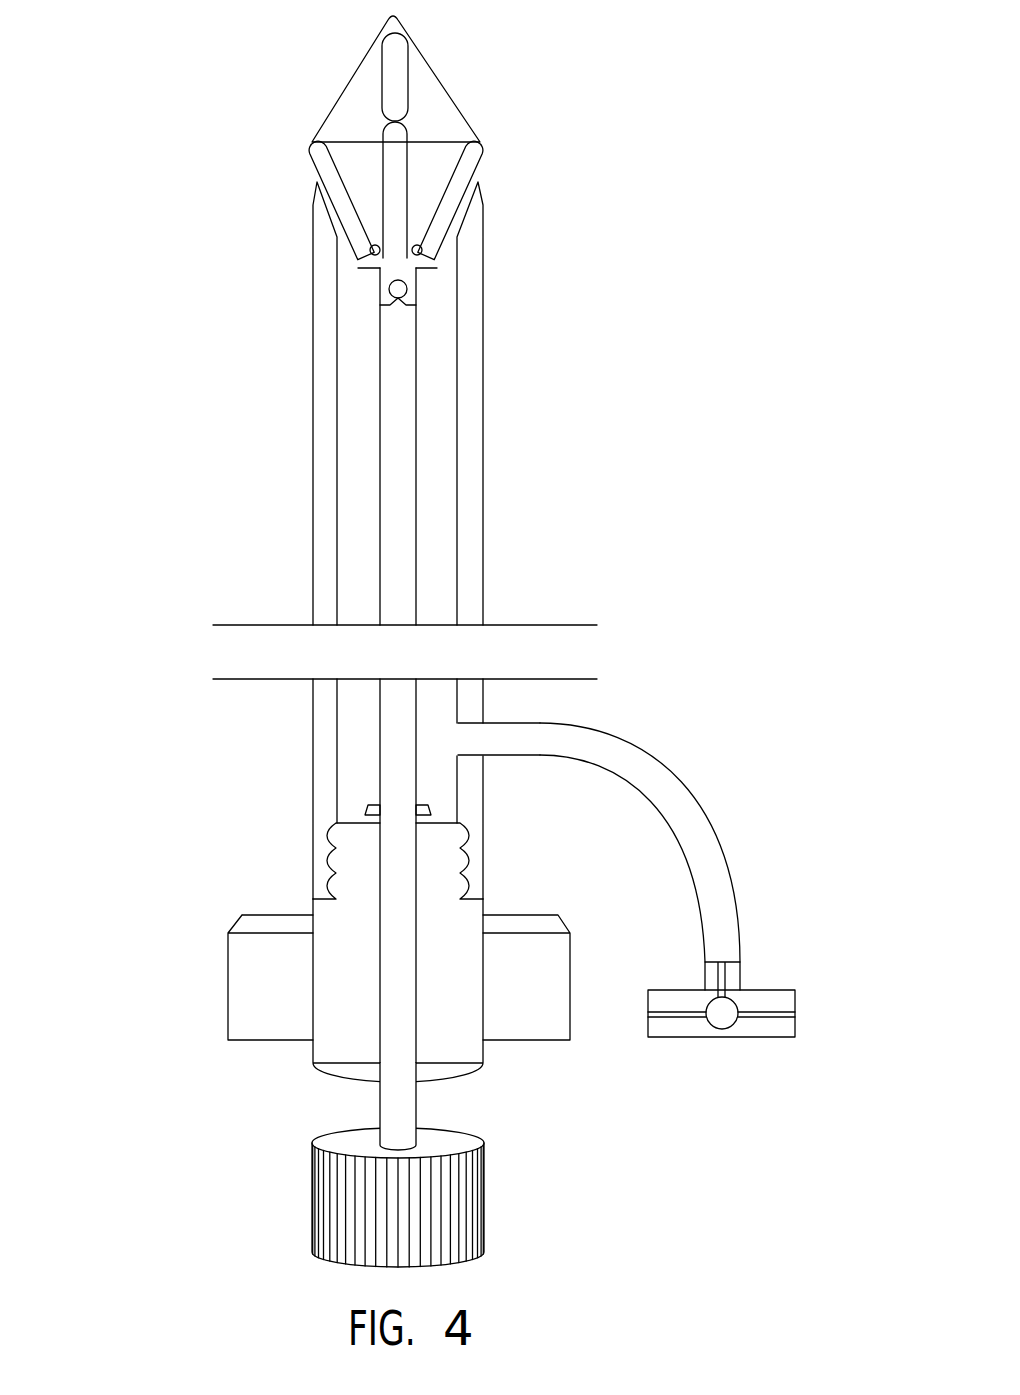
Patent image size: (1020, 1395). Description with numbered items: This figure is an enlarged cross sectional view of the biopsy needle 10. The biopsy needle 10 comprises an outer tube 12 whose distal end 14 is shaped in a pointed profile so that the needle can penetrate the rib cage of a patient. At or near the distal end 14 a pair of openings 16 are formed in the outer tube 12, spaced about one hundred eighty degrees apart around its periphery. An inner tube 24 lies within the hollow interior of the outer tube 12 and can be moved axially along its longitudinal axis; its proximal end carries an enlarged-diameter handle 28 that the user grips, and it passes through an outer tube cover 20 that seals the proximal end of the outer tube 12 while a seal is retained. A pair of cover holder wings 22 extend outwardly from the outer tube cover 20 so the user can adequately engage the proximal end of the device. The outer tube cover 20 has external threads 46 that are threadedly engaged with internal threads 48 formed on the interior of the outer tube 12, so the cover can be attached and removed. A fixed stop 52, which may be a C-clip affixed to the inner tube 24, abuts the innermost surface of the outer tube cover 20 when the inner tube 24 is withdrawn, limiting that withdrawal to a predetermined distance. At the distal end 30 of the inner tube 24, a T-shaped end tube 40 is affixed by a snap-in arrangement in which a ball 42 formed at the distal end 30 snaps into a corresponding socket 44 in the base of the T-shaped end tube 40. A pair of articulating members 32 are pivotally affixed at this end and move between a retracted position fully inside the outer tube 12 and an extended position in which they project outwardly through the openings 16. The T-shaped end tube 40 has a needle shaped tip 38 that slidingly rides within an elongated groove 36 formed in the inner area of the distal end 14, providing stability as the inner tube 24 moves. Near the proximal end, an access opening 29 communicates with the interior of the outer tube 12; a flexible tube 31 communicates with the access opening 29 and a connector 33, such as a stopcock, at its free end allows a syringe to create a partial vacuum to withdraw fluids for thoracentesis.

The biopsy needle 10 is at (157, 448).
The outer tube 12 is at (313, 710).
The distal end 14 is at (342, 87).
The openings 16 is at (396, 189).
The outer tube cover 20 is at (330, 1018).
The cover holder wings 22 is at (258, 970).
The inner tube 24 is at (397, 1108).
The handle 28 is at (325, 1205).
The access opening 29 is at (472, 738).
The distal end 30 is at (403, 335).
The flexible tube 31 is at (685, 775).
The articulating members 32 is at (453, 180).
The connector 33 is at (740, 1040).
The elongated groove 36 is at (393, 92).
The needle shaped tip 38 is at (397, 213).
The T-shaped end tube 40 is at (435, 265).
The ball 42 is at (387, 288).
The socket 44 is at (413, 297).
The external threads 46 is at (335, 850).
The internal threads 48 is at (465, 838).
The fixed stop 52 is at (365, 808).